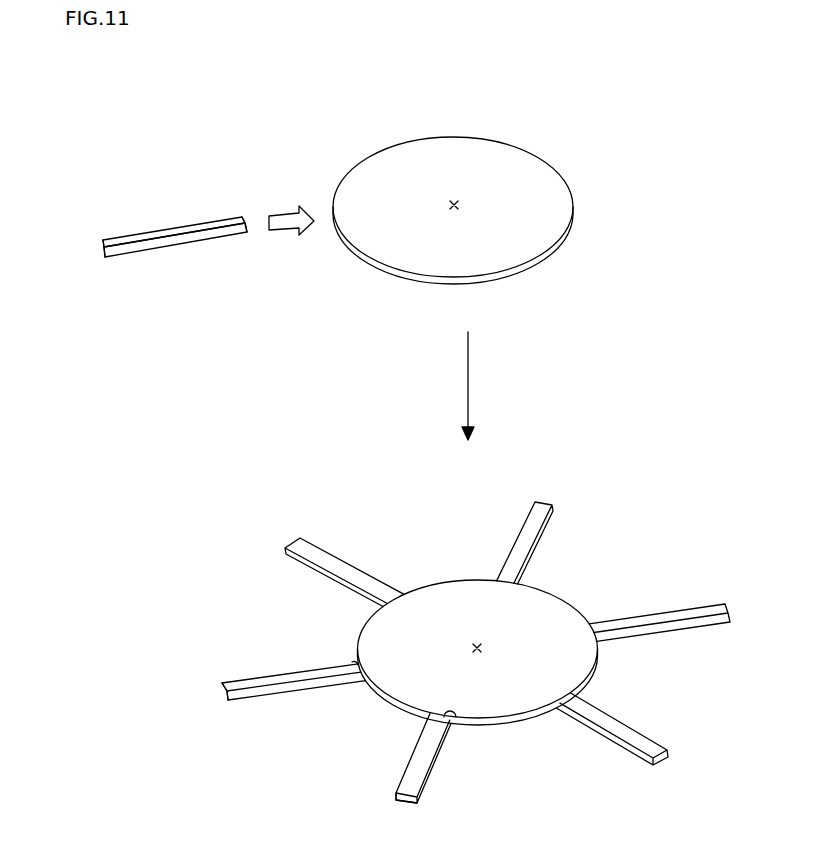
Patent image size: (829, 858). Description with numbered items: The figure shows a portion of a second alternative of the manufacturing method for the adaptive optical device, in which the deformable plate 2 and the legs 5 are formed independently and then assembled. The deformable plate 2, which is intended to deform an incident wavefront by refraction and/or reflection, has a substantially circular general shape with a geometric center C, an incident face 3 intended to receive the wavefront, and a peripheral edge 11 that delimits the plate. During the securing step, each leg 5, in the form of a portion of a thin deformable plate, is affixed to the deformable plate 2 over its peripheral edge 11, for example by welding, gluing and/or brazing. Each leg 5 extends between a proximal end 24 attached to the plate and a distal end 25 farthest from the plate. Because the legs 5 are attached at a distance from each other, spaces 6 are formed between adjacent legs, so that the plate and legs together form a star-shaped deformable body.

The deformable plate 2 is at (455, 418).
The incident face 3 is at (418, 160).
The legs 5 is at (406, 509).
The spaces 6 is at (297, 613).
The peripheral edge 11 is at (334, 213).
The proximal end 24 is at (246, 223).
The distal end 25 is at (105, 257).
The geometric center C is at (450, 210).